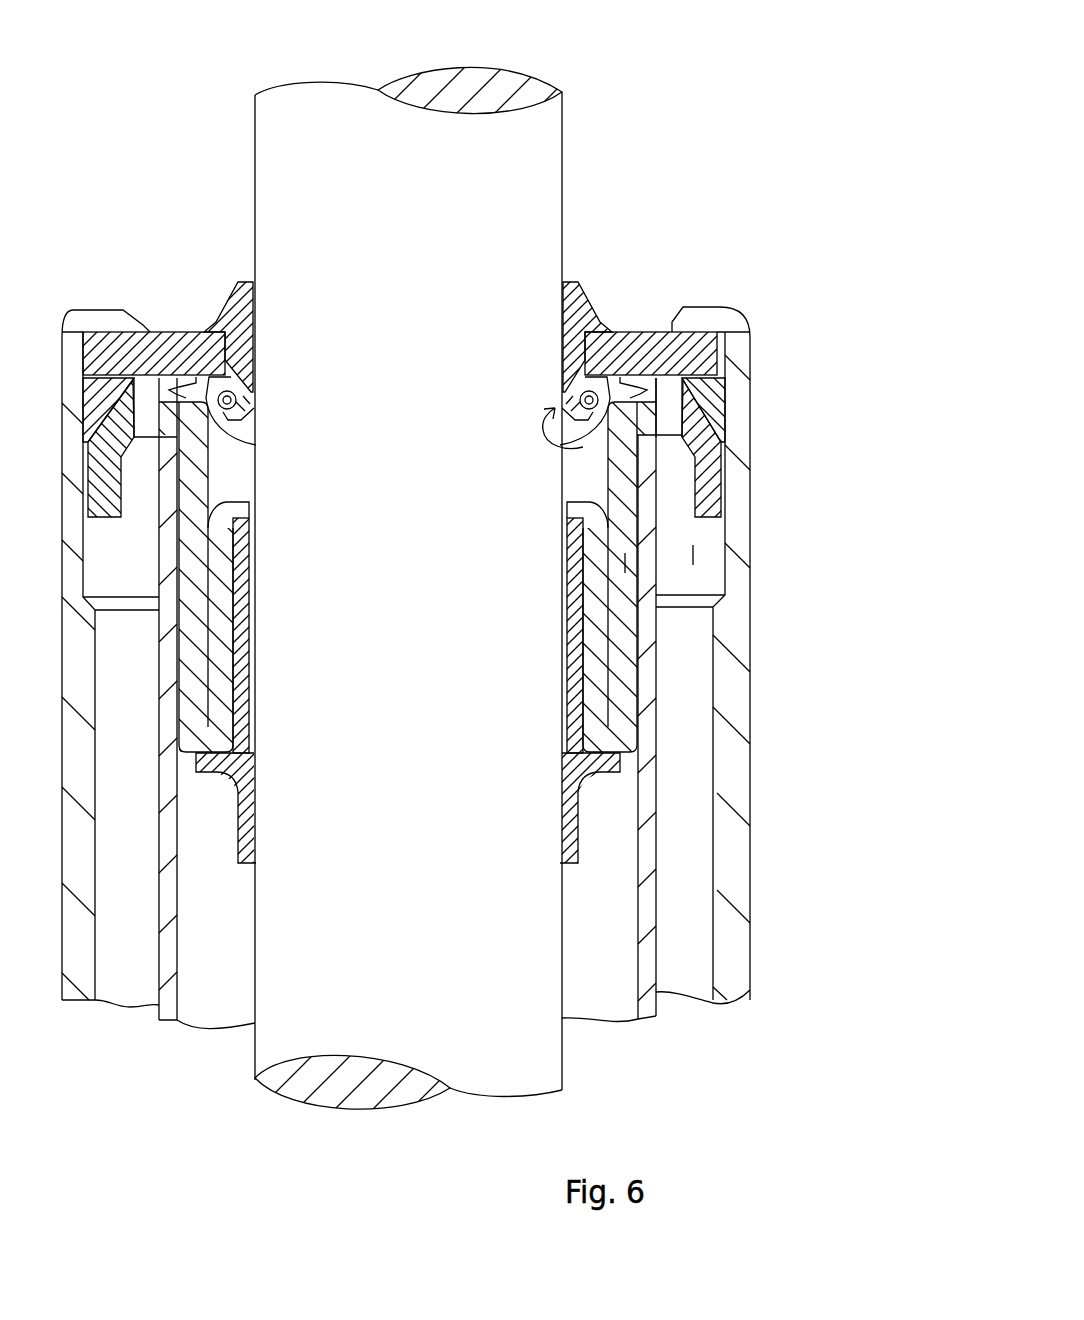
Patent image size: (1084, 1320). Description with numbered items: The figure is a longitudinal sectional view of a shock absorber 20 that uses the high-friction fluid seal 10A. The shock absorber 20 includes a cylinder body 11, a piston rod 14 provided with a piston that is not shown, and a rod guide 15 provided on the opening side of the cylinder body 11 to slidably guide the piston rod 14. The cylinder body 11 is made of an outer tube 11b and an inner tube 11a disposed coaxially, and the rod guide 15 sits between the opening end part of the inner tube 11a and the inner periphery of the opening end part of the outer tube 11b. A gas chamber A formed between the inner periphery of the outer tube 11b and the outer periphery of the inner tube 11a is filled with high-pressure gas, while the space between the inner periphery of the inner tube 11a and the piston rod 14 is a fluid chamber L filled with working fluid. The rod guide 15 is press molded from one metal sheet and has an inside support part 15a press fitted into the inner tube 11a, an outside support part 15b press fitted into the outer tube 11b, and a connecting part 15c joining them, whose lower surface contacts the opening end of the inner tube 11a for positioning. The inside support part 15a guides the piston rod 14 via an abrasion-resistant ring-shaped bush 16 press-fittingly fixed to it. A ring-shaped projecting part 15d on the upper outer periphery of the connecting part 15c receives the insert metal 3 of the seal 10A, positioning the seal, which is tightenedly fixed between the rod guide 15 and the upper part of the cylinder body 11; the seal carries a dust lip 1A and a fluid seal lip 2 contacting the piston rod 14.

The shock absorber 20 is at (699, 126).
The piston rod 14 is at (562, 130).
The dust lip 1A is at (594, 277).
The high-friction fluid seal 10A is at (680, 282).
The fluid seal lip 2 is at (618, 345).
The insert metal 3 is at (692, 342).
The rod guide 15 is at (514, 565).
The inside support part 15a is at (498, 577).
The outside support part 15b is at (712, 500).
The connecting part 15c is at (712, 432).
The ring-shaped projecting part 15d is at (720, 395).
The ring-shaped bush 16 is at (587, 705).
The gas chamber A is at (687, 797).
The fluid chamber L is at (618, 840).
The cylinder body 11 is at (499, 668).
The inner tube 11a is at (648, 902).
The outer tube 11b is at (737, 948).